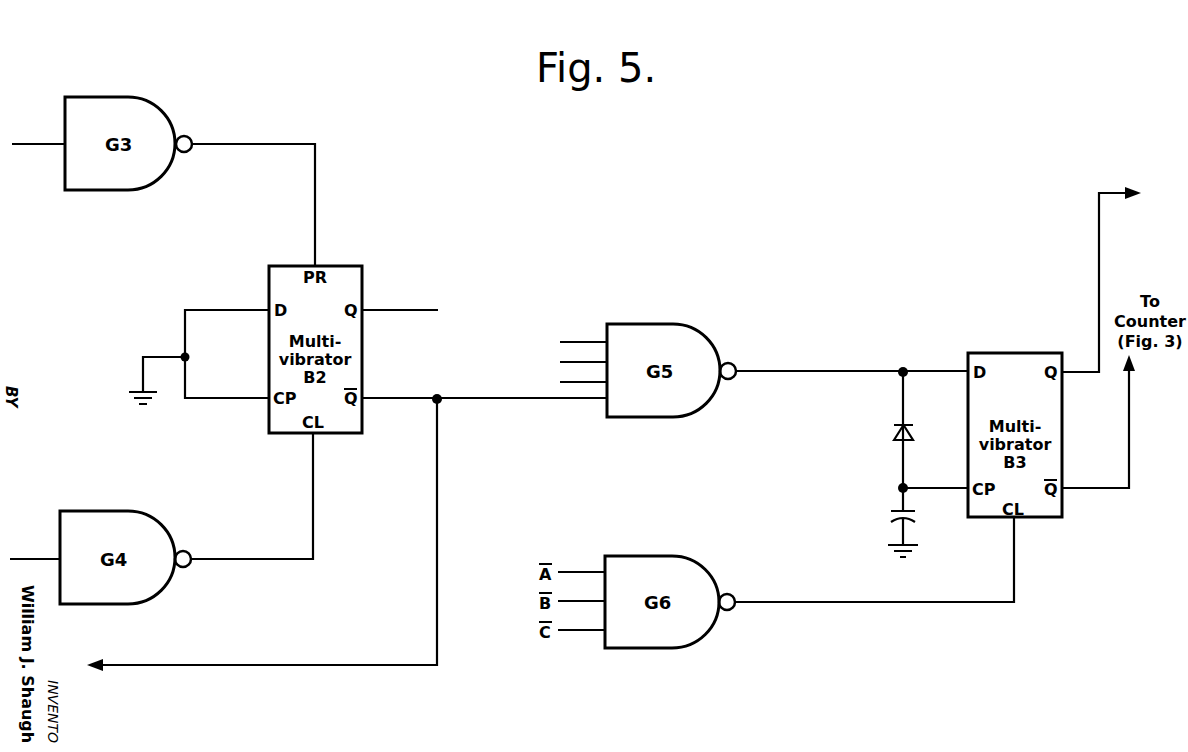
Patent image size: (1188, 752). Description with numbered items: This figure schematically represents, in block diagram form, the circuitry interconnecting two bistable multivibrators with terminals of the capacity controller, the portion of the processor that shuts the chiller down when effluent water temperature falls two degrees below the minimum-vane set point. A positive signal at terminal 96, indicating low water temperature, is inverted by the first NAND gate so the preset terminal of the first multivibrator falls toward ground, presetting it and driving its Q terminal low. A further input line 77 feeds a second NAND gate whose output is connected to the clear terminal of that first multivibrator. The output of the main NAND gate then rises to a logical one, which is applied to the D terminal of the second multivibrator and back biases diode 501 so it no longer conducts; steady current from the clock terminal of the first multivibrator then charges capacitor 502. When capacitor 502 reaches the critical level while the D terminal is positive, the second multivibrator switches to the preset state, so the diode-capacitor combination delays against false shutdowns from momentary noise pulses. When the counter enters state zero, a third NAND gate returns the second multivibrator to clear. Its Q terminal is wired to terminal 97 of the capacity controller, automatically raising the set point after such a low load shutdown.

The terminal 96 is at (38, 130).
The input signal line to gate G4 77 is at (35, 545).
The terminal 97 is at (614, 431).
The diode 501 is at (883, 430).
The capacitor 502 is at (880, 522).